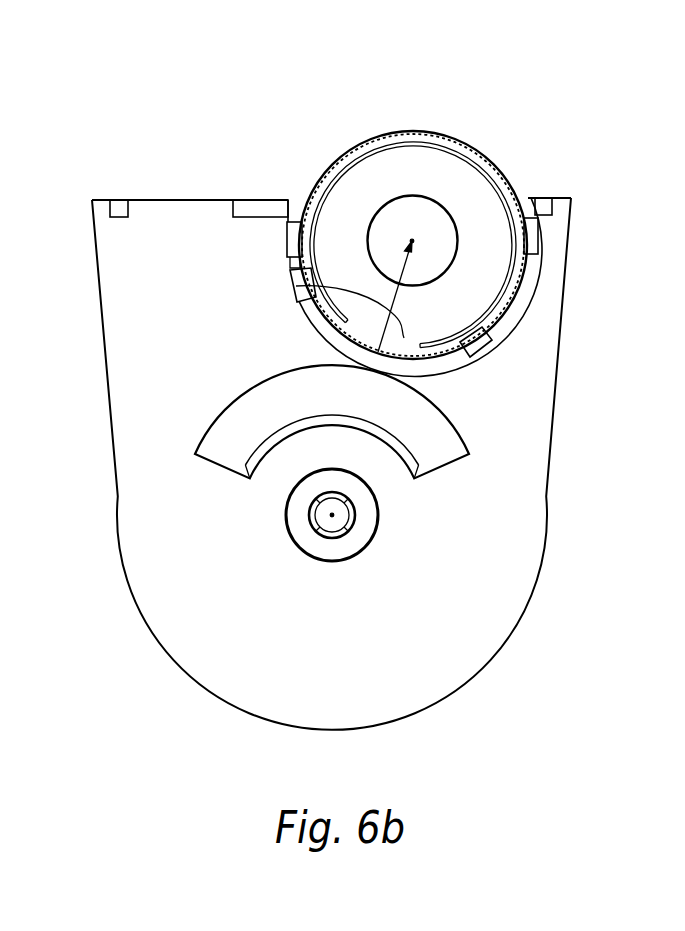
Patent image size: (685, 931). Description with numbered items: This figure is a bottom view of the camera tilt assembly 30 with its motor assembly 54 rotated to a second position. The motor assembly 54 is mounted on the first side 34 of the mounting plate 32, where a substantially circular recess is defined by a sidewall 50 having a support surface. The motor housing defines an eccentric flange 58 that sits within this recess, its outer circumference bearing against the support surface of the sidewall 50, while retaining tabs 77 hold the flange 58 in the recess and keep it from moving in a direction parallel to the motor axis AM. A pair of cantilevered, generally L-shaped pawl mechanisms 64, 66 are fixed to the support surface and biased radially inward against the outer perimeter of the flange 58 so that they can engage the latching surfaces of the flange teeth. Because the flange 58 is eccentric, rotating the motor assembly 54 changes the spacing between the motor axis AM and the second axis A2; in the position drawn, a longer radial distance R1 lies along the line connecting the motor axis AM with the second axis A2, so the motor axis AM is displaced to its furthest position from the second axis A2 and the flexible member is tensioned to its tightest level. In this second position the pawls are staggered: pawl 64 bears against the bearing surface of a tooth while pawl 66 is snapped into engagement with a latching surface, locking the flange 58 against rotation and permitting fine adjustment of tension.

The camera tilt assembly 30 is at (500, 120).
The mounting plate 32 is at (452, 697).
The first side 34 is at (243, 688).
The sidewall 50 is at (507, 322).
The motor assembly 54 is at (483, 207).
The eccentric flange 58 is at (308, 198).
The pawl mechanism 64 is at (290, 235).
The pawl mechanism 66 is at (535, 242).
The retaining tabs 77 is at (487, 350).
The radius R1 is at (296, 286).
The motor axis AM is at (412, 241).
The second axis A2 is at (332, 515).